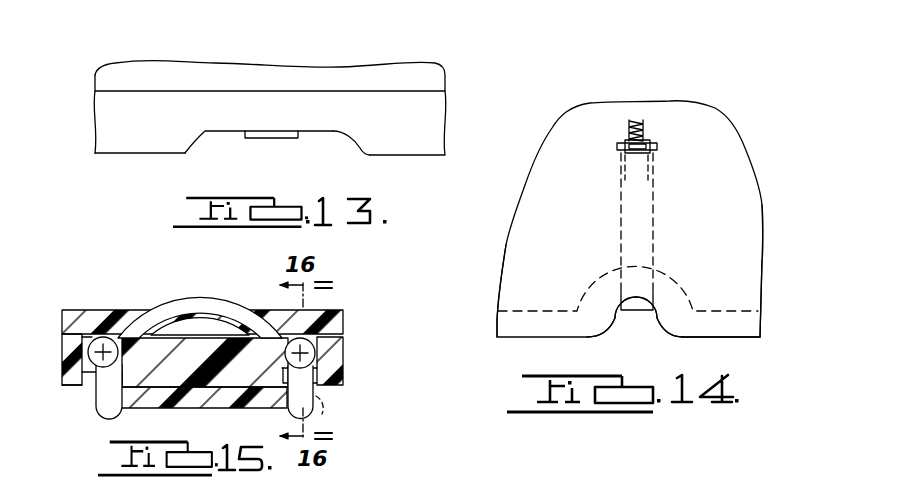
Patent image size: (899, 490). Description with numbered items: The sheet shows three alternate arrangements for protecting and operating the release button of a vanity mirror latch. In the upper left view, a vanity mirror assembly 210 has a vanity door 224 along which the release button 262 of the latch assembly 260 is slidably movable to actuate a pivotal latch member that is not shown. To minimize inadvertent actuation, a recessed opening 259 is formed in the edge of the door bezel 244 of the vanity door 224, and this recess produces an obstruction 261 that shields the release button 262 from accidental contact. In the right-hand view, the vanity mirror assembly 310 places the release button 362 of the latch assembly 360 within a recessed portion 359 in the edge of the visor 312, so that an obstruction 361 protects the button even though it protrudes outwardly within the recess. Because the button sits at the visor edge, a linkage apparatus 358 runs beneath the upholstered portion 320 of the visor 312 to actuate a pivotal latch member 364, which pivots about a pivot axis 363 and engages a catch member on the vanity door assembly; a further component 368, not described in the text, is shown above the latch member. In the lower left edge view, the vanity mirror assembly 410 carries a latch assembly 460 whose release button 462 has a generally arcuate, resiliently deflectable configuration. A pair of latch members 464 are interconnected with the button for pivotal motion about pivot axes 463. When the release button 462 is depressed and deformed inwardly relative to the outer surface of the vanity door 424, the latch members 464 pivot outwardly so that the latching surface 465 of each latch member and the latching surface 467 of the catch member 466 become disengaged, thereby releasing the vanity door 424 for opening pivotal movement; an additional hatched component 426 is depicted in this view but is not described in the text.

In FIG. 13, the cutting insert body 210 is at (452, 113).
In FIG. 13, the vanity door 224 is at (97, 75).
In FIG. 13, the door bezel 244 is at (112, 131).
In FIG. 13, the recessed opening 259 is at (207, 132).
In FIG. 13, the latch assembly 260 is at (317, 147).
In FIG. 13, the obstruction 261 is at (188, 156).
In FIG. 13, the release button 262 is at (281, 139).
In FIG. 14, the vanity mirror assembly 310 is at (765, 156).
In FIG. 14, the visor 312 is at (522, 264).
In FIG. 14, the upholstered portion 320 is at (750, 236).
In FIG. 14, the linkage apparatus 358 is at (656, 210).
In FIG. 14, the recessed portion 359 is at (610, 309).
In FIG. 14, the latch assembly 360 is at (616, 323).
In FIG. 14, the obstruction 361 is at (683, 336).
In FIG. 14, the release button 362 is at (641, 313).
In FIG. 14, the pivot axis 363 is at (657, 149).
In FIG. 14, the pivotal latch member 364 is at (651, 139).
In FIG. 14, the spring 368 is at (622, 133).
In FIG. 15, the vanity mirror assembly 410 is at (55, 302).
In FIG. 15, the vanity door 424 is at (94, 309).
In FIG. 15, the middle block 426 is at (337, 360).
In FIG. 15, the latch assembly 460 is at (175, 284).
In FIG. 15, the release button 462 is at (208, 303).
In FIG. 15, the pivot axes 463 is at (105, 368).
In FIG. 15, the latch members 464 is at (107, 392).
In FIG. 15, the latching surface 465 is at (313, 408).
In FIG. 15, the catch member 466 is at (180, 399).
In FIG. 15, the latching surface 467 is at (130, 413).